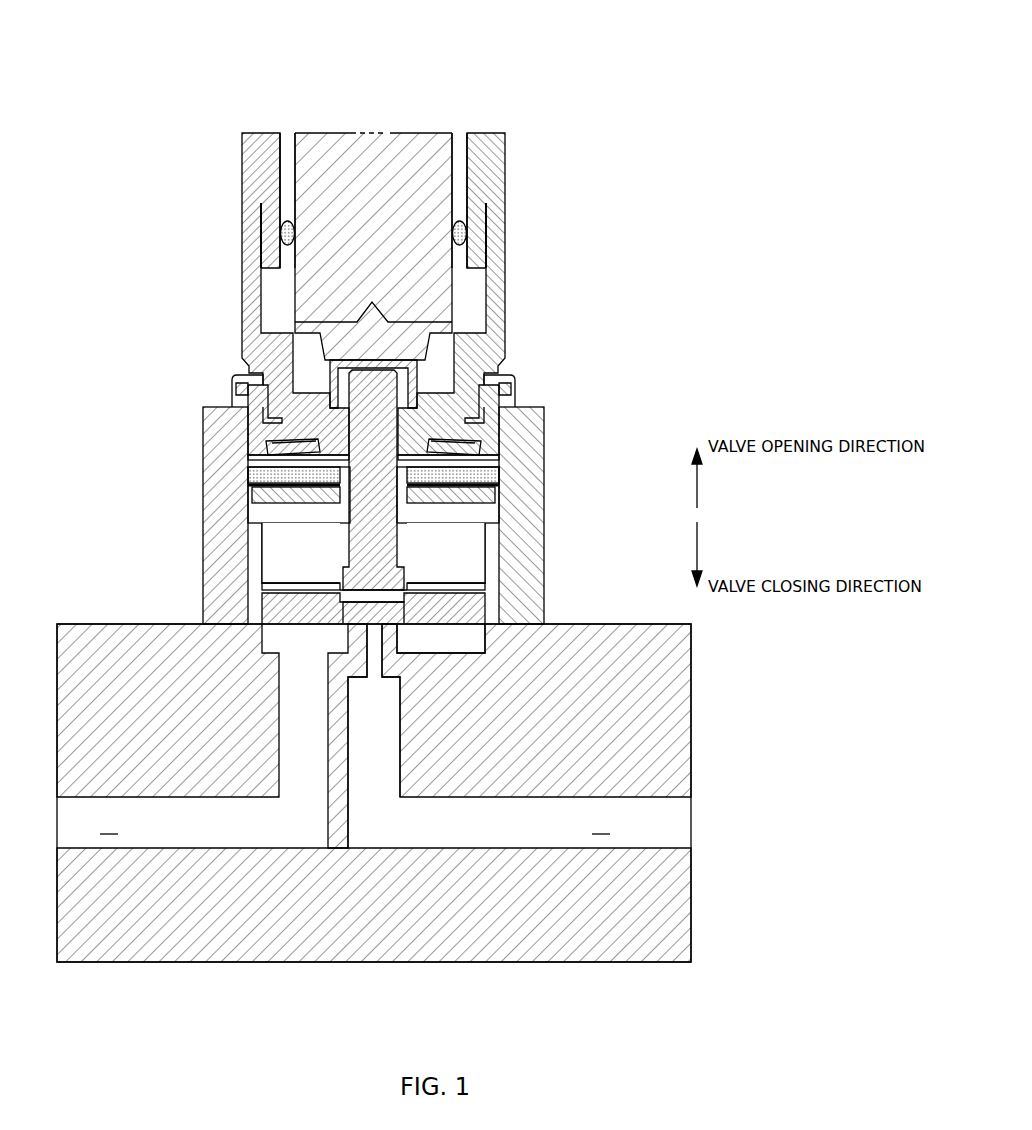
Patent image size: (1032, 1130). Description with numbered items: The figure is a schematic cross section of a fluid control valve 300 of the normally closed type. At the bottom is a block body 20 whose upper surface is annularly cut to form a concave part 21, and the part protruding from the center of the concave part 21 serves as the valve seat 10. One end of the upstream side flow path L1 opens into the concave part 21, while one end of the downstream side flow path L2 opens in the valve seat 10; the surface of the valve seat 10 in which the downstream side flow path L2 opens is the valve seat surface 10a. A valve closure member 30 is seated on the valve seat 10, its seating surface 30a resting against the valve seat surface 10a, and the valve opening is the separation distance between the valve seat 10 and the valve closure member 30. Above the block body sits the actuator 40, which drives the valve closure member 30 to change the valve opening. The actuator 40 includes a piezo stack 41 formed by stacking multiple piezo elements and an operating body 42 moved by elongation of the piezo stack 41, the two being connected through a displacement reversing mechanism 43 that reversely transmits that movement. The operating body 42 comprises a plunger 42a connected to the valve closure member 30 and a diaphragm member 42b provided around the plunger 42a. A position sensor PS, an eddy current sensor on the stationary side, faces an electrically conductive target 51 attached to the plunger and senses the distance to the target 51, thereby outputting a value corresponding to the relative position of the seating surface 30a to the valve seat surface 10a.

The fluid control valve 300 is at (413, 486).
The valve seat 10 is at (347, 640).
The valve seat surface 10a is at (393, 617).
The block body 20 is at (431, 770).
The concave part 21 is at (468, 638).
The valve closure member 30 is at (436, 584).
The seating surface 30a is at (354, 625).
The actuator 40 is at (313, 378).
The piezo stack 41 is at (315, 268).
The operating body 42 is at (341, 514).
The plunger 42a is at (280, 513).
The diaphragm member 42b is at (277, 582).
The displacement reversing mechanism 43 is at (520, 356).
The target 51 is at (353, 542).
The position sensor PS is at (500, 490).
The upstream side flow path L1 is at (109, 825).
The downstream side flow path L2 is at (601, 825).